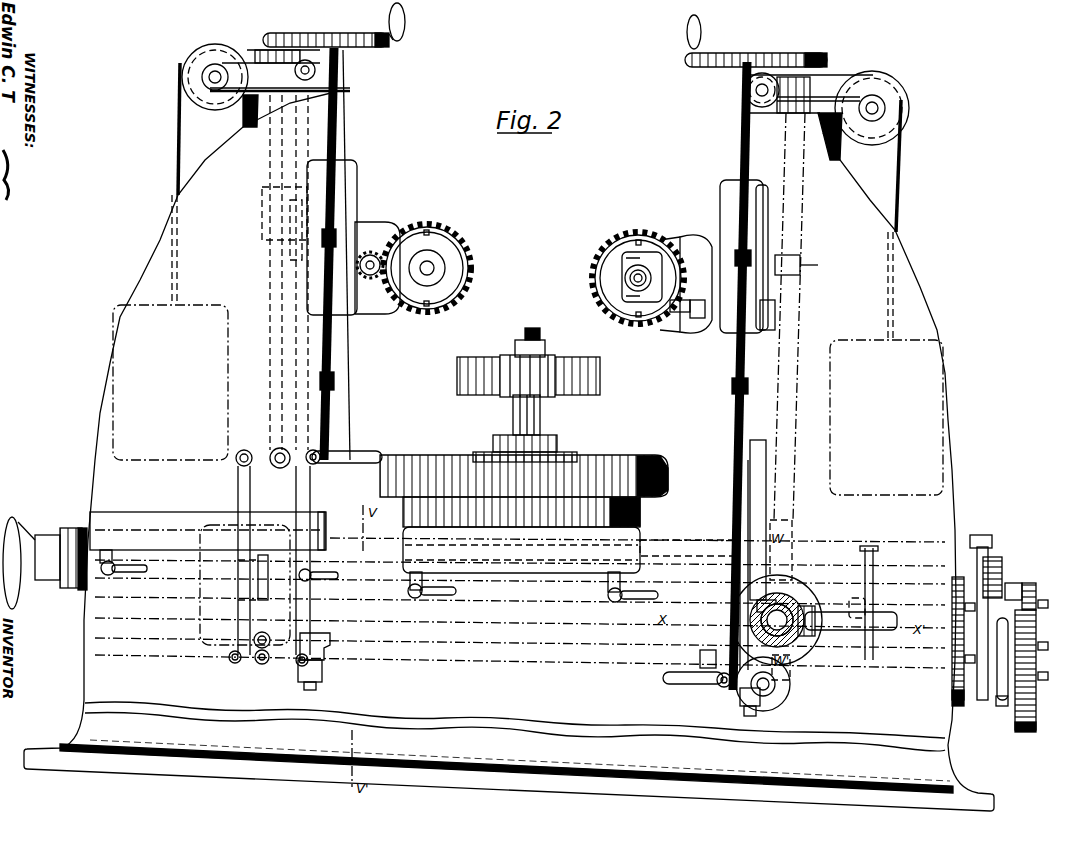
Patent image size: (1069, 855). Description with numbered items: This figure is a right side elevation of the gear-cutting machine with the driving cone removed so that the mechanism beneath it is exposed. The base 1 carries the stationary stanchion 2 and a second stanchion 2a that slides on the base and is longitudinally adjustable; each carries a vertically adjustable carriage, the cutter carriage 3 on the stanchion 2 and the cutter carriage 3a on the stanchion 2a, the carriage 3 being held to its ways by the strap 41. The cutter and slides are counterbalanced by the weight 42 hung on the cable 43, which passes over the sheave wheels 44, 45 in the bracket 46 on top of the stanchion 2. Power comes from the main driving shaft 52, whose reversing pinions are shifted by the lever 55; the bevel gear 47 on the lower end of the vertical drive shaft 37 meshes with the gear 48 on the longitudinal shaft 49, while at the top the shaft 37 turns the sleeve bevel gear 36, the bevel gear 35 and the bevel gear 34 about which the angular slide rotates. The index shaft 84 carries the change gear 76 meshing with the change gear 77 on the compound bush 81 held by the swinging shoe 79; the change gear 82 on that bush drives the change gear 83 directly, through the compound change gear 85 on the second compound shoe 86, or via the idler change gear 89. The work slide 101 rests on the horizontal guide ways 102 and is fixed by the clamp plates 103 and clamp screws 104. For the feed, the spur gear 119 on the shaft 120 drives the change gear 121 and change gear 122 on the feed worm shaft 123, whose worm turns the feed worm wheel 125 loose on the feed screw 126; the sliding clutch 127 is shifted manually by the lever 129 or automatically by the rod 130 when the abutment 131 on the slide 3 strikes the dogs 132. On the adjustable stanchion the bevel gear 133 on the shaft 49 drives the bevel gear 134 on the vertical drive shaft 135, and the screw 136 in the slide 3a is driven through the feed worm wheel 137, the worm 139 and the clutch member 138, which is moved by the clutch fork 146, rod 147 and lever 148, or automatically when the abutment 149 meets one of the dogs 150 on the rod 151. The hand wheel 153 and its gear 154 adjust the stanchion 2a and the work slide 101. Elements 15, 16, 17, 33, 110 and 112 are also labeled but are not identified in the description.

The base 1 is at (945, 722).
The stanchion 2 is at (955, 500).
The second stanchion 2a is at (97, 470).
The cutter carriage 3 is at (720, 188).
The cutter carriage 3a is at (352, 172).
The sprocket hub ring 15 is at (615, 307).
The sprocket wheel 16 is at (626, 237).
The sprocket bracket 17 is at (700, 275).
The bracket lug 33 is at (675, 312).
The bevel gear 34 is at (698, 318).
The bevel gear 35 is at (765, 320).
The sleeve bevel gear 36 is at (806, 265).
The vertical drive shaft 37 is at (790, 437).
The strap 41 is at (762, 200).
The weight 42 is at (946, 350).
The cable 43 is at (900, 172).
The sheave wheel 44 is at (897, 98).
The sheave wheel 45 is at (780, 88).
The bracket 46 is at (818, 96).
The bevel gear 47 is at (800, 607).
The gear 48 is at (762, 602).
The longitudinal shaft 49 is at (612, 622).
The main driving shaft 52 is at (785, 630).
The lever 55 is at (893, 632).
The change gear 76 is at (998, 560).
The change gear 77 is at (990, 585).
The swinging shoe 79 is at (977, 551).
The compound bush 81 is at (1018, 588).
The change gear 82 is at (1036, 590).
The change gear 83 is at (1018, 712).
The index shaft 84 is at (908, 578).
The compound change gear 85 is at (1000, 625).
The second compound shoe 86 is at (998, 698).
The idler change gear 89 is at (1030, 731).
The work slide 101 is at (635, 525).
The horizontal guide ways 102 is at (690, 552).
The clamp plates 103 is at (640, 570).
The clamp screws 104 is at (410, 588).
The gear base 110 is at (557, 450).
The gear shaft 112 is at (540, 415).
The spur gear 119 is at (868, 556).
The shaft 120 is at (905, 603).
The change gear 121 is at (952, 630).
The change gear 122 is at (957, 706).
The feed worm shaft 123 is at (400, 657).
The feed worm wheel 125 is at (703, 652).
The feed screw 126 is at (757, 490).
The sliding clutch 127 is at (730, 690).
The lever 129 is at (663, 679).
The rod 130 is at (733, 527).
The abutment 131 is at (740, 340).
The dogs 132 is at (752, 258).
The bevel gear 133 is at (250, 605).
The bevel gear 134 is at (255, 567).
The vertical drive shaft 135 is at (268, 380).
The screw 136 is at (315, 495).
The feed worm wheel 137 is at (326, 642).
The clutch member 138 is at (322, 668).
The worm 139 is at (265, 636).
The clutch fork 146 is at (245, 660).
The rod 147 is at (238, 487).
The lever 148 is at (345, 453).
The abutment 149 is at (340, 305).
The dogs 150 is at (336, 237).
The rod 151 is at (330, 405).
The hand wheel 153 is at (22, 520).
The gear 154 is at (68, 585).